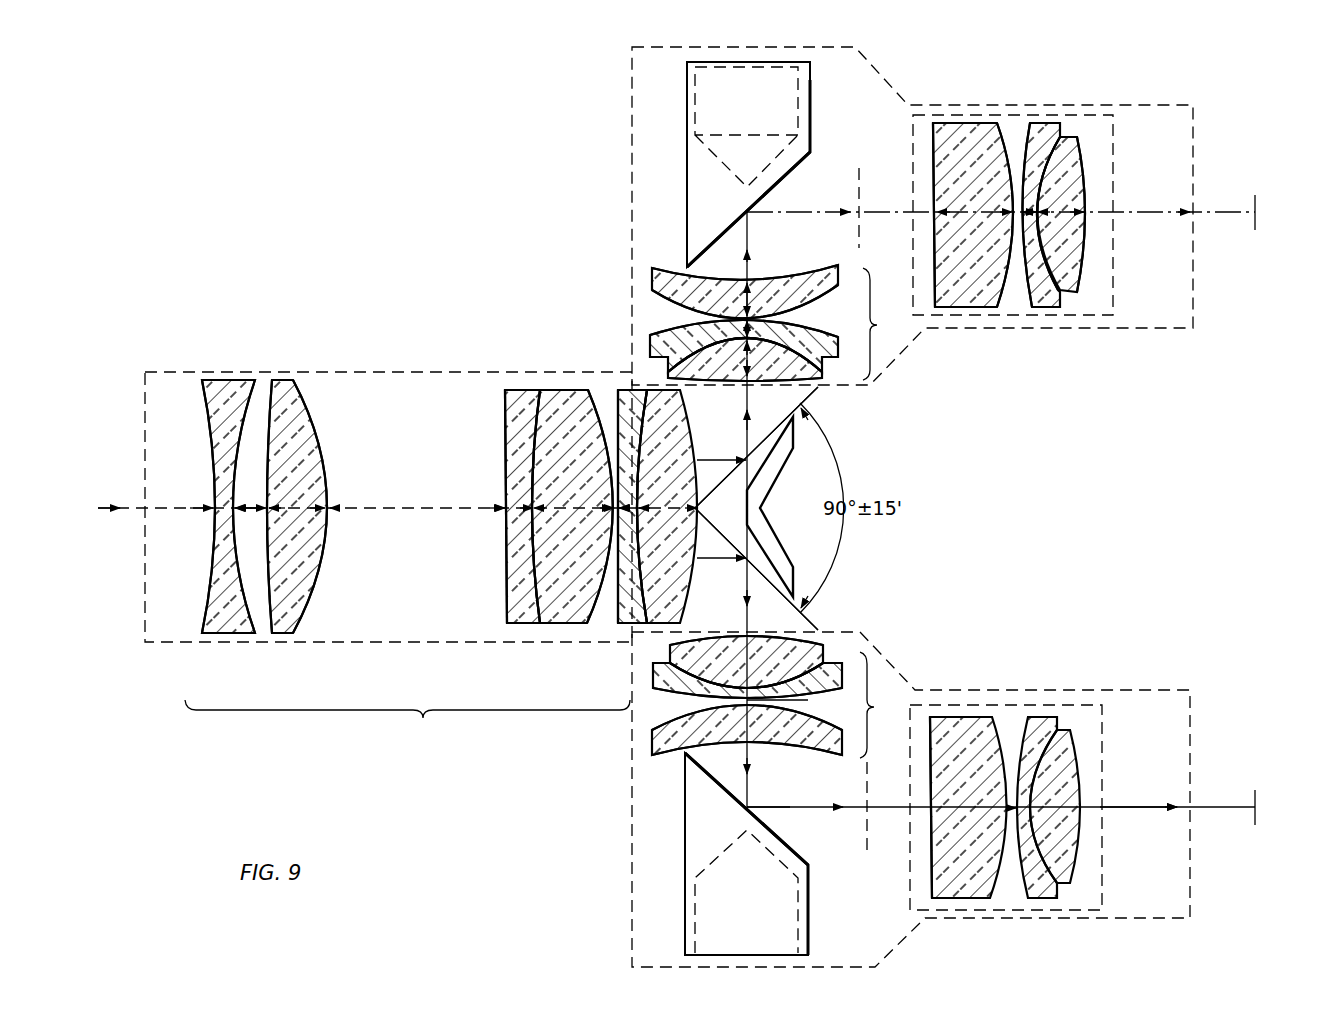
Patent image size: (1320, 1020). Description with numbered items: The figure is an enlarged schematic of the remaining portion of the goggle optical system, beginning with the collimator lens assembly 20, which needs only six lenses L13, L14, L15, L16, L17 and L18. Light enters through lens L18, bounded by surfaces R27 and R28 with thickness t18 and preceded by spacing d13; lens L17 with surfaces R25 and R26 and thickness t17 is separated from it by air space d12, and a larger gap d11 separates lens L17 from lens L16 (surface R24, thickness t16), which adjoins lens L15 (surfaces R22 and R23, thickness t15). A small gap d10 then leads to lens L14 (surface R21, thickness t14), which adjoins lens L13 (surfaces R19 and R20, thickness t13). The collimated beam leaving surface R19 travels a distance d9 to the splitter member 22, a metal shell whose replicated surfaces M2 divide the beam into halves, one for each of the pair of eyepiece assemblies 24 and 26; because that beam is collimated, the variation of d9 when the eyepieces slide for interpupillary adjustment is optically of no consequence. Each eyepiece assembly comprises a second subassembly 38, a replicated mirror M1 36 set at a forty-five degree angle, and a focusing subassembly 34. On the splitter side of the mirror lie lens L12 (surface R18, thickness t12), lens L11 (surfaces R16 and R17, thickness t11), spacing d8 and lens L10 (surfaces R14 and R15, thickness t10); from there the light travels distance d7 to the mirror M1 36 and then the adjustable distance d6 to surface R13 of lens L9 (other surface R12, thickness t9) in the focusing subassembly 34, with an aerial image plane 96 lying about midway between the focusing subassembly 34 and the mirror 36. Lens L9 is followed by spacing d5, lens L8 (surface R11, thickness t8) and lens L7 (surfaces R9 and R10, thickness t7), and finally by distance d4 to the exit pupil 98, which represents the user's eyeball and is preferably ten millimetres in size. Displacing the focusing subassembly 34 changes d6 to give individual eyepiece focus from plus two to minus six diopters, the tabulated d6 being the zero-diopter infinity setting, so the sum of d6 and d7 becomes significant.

The collimator lens assembly 20 is at (388, 561).
The splitter member 22 is at (785, 452).
The eyepiece assembly 24 is at (905, 92).
The eyepiece assembly 26 is at (892, 662).
The focusing subassembly 34 is at (1010, 116).
The replicated mirror 36 is at (808, 158).
The second subassembly 38 is at (882, 513).
The aerial image plane 96 is at (861, 240).
The exit pupil 98 is at (1257, 195).
The replicated mirror surface M1 is at (790, 172).
The replicated splitter surfaces M2 is at (766, 470).
The lens L7 is at (1067, 296).
The lens L8 is at (1048, 310).
The lens L9 is at (977, 310).
The lens L10 is at (650, 280).
The lens L11 is at (648, 345).
The lens L12 is at (690, 379).
The lens L13 is at (662, 670).
The lens L14 is at (632, 626).
The lens L15 is at (561, 386).
The lens L16 is at (513, 386).
The lens L17 is at (287, 375).
The lens L18 is at (238, 375).
The lens surface radius R9 is at (1088, 190).
The lens surface radius R10 is at (1047, 263).
The lens surface radius R11 is at (1034, 147).
The lens surface radius R12 is at (1005, 262).
The lens surface radius R13 is at (932, 172).
The lens surface radius R14 is at (800, 267).
The lens surface radius R15 is at (735, 310).
The lens surface radius R16 is at (800, 342).
The lens surface radius R17 is at (822, 348).
The lens surface radius R18 is at (650, 338).
The lens surface radius R19 is at (700, 452).
The lens surface radius R20 is at (640, 598).
The lens surface radius R21 is at (612, 628).
The lens surface radius R22 is at (604, 450).
The lens surface radius R23 is at (548, 610).
The lens surface radius R24 is at (506, 598).
The lens surface radius R25 is at (328, 443).
The lens surface radius R26 is at (275, 490).
The lens surface radius R27 is at (240, 553).
The lens surface radius R28 is at (211, 478).
The lens thickness t7 is at (1065, 212).
The lens thickness t8 is at (1020, 160).
The lens thickness t9 is at (960, 212).
The lens thickness t10 is at (752, 310).
The lens thickness t11 is at (740, 325).
The lens thickness t12 is at (715, 378).
The lens thickness t13 is at (680, 512).
The lens thickness t14 is at (630, 628).
The lens thickness t15 is at (555, 512).
The lens thickness t16 is at (515, 508).
The lens thickness t17 is at (318, 512).
The lens thickness t18 is at (215, 527).
The air spacing d4 is at (1138, 788).
The air spacing d5 is at (1012, 800).
The air spacing d6 is at (768, 792).
The air spacing d7 is at (750, 800).
The air spacing d8 is at (787, 702).
The air spacing d9 is at (742, 562).
The air spacing d10 is at (617, 500).
The air spacing d11 is at (430, 512).
The air spacing d12 is at (258, 507).
The air spacing d13 is at (133, 512).